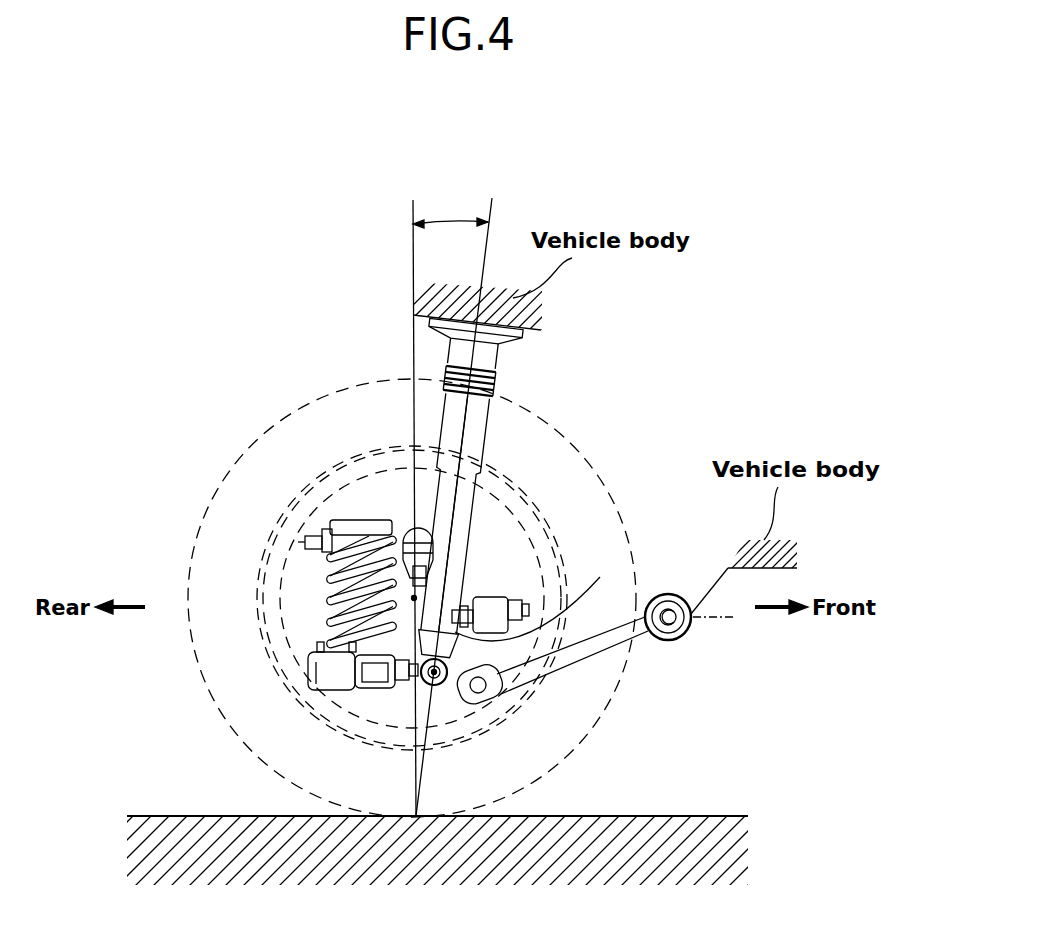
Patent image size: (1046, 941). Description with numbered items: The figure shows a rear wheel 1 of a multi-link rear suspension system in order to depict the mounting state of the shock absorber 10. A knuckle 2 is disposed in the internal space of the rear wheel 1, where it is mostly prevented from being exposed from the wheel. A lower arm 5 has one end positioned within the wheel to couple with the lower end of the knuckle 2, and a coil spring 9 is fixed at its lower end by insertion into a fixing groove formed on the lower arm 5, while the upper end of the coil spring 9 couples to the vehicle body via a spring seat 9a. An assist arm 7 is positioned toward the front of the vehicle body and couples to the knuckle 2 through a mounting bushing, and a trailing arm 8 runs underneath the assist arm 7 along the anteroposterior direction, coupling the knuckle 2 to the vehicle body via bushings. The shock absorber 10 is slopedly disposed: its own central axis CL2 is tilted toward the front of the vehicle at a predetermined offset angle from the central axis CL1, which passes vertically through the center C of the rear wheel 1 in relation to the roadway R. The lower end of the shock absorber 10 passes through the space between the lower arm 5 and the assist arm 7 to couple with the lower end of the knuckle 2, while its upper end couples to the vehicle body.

The rear wheel 1 is at (207, 516).
The knuckle 2 is at (497, 647).
The lower arm 5 is at (310, 665).
The assist arm 7 is at (507, 592).
The trailing arm 8 is at (591, 645).
The coil spring 9 is at (413, 597).
The spring seat 9a is at (349, 522).
The shock absorber 10 is at (493, 388).
The center of rear wheel C is at (323, 533).
The roadway R is at (668, 815).
The central axis CL1 is at (411, 494).
The central axis of shock absorber CL2 is at (463, 494).